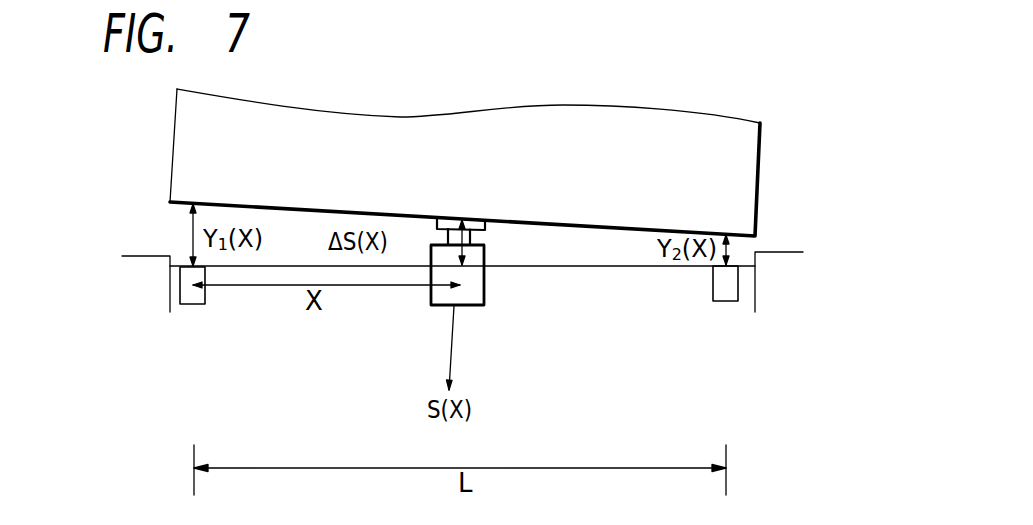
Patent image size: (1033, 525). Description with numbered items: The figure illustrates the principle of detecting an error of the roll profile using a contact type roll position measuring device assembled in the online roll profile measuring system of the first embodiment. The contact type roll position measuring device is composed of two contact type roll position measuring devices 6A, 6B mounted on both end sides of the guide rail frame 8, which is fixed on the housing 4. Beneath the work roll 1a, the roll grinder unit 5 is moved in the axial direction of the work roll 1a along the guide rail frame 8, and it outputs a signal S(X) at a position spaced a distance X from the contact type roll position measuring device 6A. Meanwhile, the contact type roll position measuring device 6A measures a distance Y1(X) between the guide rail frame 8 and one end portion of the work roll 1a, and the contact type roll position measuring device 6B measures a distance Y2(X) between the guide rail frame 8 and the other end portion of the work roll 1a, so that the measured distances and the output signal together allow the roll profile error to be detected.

The work roll 1a is at (748, 156).
The housing 4 is at (787, 257).
The roll grinder unit 5 is at (473, 293).
The contact type roll position measuring device 6A is at (192, 305).
The contact type roll position measuring device 6B is at (727, 302).
The guide rail frame 8 is at (550, 280).